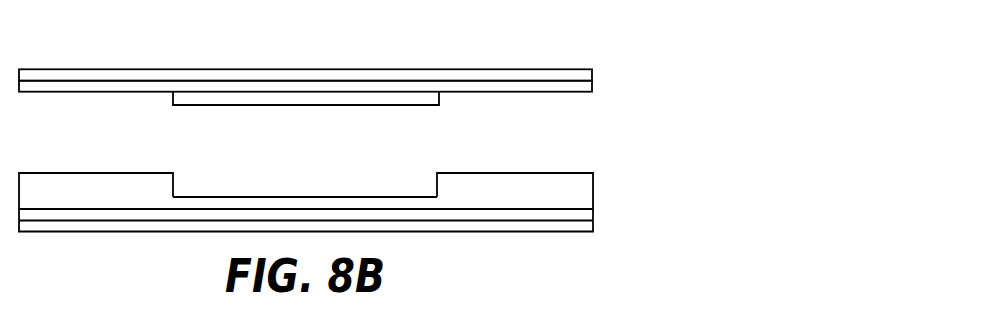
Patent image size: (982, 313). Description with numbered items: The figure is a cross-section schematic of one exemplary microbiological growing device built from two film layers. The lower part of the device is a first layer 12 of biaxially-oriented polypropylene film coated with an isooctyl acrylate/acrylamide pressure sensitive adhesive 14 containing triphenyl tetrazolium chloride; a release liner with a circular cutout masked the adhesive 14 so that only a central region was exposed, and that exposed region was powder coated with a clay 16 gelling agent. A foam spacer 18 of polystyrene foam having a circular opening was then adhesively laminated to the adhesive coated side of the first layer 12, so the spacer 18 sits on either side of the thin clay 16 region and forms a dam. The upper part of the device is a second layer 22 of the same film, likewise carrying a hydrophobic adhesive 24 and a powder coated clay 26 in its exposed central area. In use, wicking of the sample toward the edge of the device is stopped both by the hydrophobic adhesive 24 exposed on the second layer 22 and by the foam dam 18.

The first layer 12 is at (590, 227).
The adhesive 14 is at (589, 215).
The clay 16 is at (362, 195).
The foam spacer 18 is at (587, 185).
The second layer 22 is at (588, 73).
The adhesive 24 is at (589, 88).
The clay 26 is at (433, 99).